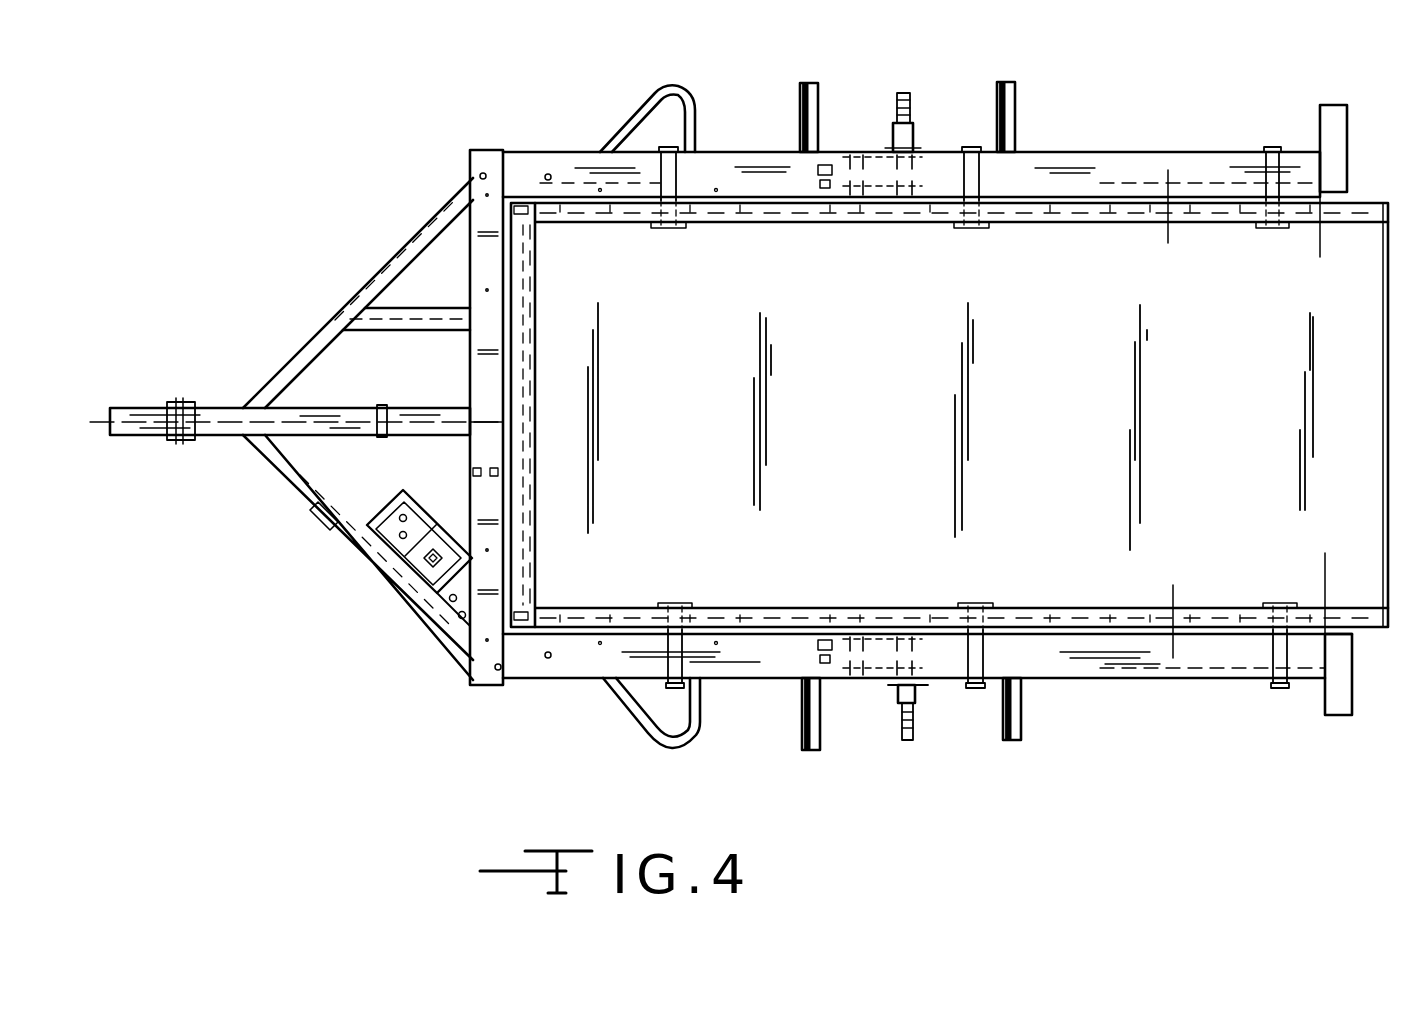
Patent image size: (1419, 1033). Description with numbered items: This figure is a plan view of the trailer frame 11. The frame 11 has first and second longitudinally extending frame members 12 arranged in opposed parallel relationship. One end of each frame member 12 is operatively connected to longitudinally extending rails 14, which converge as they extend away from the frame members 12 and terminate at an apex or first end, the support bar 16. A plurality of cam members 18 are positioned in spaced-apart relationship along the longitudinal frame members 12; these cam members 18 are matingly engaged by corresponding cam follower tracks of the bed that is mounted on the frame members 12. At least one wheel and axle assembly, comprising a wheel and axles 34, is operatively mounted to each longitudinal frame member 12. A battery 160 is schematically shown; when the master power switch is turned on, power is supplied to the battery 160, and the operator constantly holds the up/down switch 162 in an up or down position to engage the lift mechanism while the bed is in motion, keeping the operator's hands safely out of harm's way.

The frame 11 is at (466, 697).
The longitudinally extending frame member 12 is at (735, 152).
The rail 14 is at (336, 316).
The support bar or end 16 is at (110, 440).
The cam member 18 is at (672, 228).
The axle 34 is at (905, 93).
The battery 160 is at (372, 545).
The up/down switch 162 is at (413, 576).